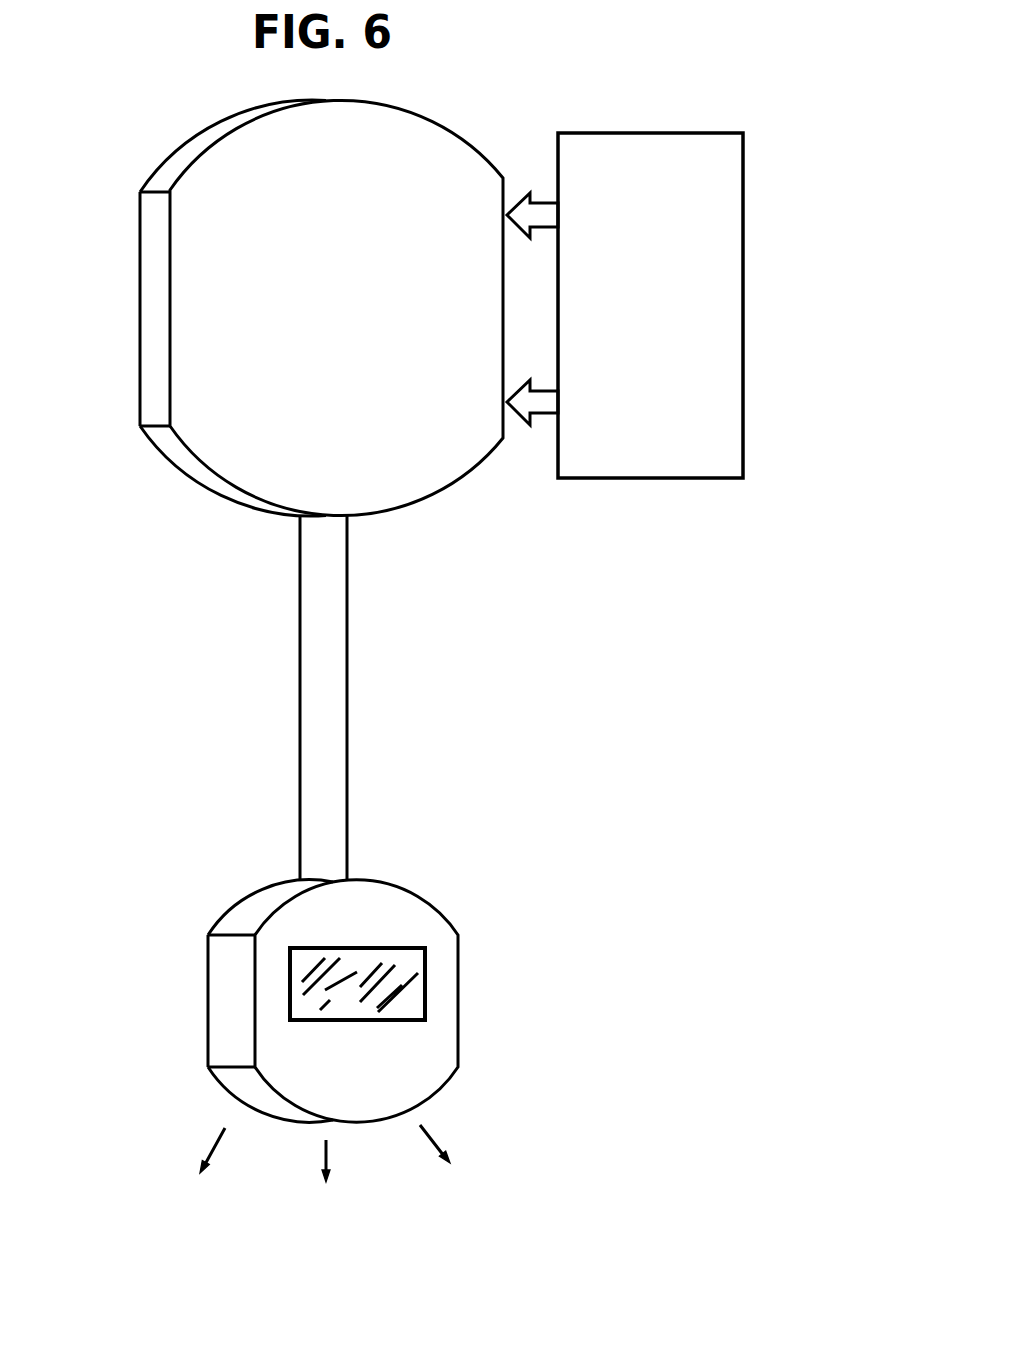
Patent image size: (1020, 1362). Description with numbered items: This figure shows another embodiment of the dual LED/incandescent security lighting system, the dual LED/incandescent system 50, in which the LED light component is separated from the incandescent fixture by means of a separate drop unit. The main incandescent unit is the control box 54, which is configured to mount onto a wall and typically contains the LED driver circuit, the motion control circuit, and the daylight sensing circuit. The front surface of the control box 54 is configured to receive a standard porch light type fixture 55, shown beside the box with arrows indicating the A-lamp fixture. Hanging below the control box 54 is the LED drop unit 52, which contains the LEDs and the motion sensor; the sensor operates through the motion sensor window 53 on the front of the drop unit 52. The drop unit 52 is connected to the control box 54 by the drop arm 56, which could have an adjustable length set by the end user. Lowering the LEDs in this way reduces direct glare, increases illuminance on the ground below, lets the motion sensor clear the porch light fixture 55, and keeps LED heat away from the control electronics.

The dual LED/incandescent system 50 is at (158, 668).
The LED drop unit 52 is at (459, 970).
The motion sensor window 53 is at (408, 948).
The control box 54 is at (210, 483).
The porch light type fixture 55 is at (661, 343).
The drop arm 56 is at (298, 697).